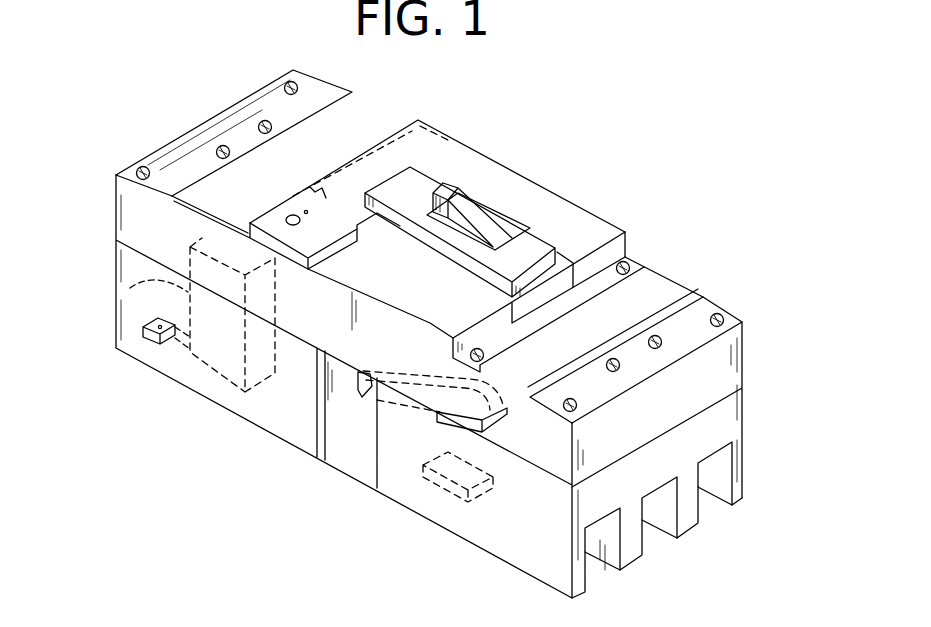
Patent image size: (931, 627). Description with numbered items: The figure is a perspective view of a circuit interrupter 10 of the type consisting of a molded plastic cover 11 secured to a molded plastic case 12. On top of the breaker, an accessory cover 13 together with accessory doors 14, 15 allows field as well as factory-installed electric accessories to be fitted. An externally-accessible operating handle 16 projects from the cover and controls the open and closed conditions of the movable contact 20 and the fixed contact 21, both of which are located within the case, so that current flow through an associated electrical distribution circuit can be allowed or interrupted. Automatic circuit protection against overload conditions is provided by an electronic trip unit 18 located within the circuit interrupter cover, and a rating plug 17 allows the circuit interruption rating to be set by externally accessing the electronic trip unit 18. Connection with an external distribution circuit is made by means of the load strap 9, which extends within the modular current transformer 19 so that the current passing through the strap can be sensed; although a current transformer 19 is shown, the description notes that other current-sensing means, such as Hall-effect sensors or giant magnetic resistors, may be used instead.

The load strap 9 is at (143, 340).
The circuit interrupter 10 is at (239, 546).
The molded plastic cover 11 is at (743, 362).
The molded plastic case 12 is at (293, 446).
The accessory cover 13 is at (412, 121).
The accessory door 14 is at (563, 232).
The accessory door 15 is at (445, 304).
The operating handle 16 is at (443, 185).
The rating plug 17 is at (304, 232).
The electronic trip unit 18 is at (432, 118).
The modular current transformer 19 is at (117, 288).
The movable contact 20 is at (443, 425).
The fixed contact 21 is at (493, 483).